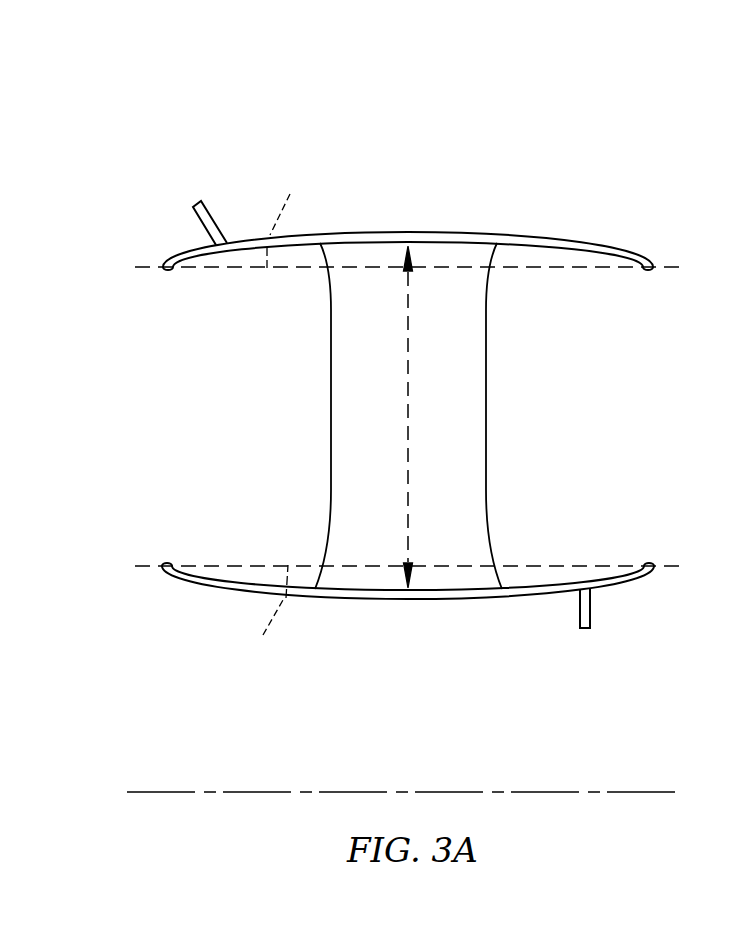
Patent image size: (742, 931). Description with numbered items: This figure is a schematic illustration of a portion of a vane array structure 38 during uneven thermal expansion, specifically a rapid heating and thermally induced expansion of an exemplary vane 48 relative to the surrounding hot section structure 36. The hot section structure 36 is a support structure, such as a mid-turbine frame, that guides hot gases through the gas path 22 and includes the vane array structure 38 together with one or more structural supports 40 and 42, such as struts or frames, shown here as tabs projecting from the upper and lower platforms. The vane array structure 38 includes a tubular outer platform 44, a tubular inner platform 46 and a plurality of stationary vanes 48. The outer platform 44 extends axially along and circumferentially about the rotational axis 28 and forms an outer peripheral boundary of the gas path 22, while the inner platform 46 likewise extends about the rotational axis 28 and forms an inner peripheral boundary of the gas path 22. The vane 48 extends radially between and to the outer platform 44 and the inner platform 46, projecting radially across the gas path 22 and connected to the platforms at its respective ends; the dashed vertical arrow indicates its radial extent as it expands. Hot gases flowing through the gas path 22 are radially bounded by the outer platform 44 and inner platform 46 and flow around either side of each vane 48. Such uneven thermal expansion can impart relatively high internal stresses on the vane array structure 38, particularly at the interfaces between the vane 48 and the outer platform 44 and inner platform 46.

The gas path 22 is at (218, 392).
The rotational axis 28 is at (665, 790).
The hot section structure 36 is at (221, 128).
The vane array structure 38 is at (573, 198).
The structural support 40 is at (208, 212).
The structural support 42 is at (592, 613).
The outer platform 44 is at (305, 237).
The inner platform 46 is at (248, 598).
The vane 48 is at (330, 437).